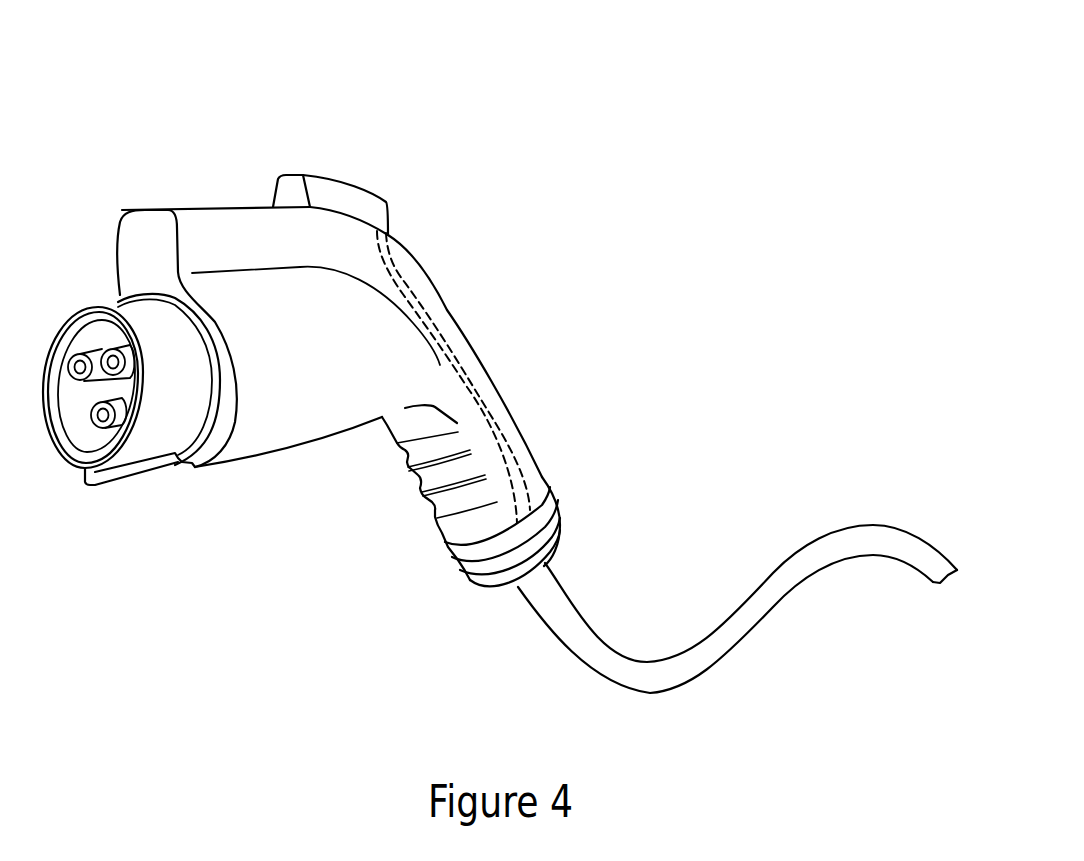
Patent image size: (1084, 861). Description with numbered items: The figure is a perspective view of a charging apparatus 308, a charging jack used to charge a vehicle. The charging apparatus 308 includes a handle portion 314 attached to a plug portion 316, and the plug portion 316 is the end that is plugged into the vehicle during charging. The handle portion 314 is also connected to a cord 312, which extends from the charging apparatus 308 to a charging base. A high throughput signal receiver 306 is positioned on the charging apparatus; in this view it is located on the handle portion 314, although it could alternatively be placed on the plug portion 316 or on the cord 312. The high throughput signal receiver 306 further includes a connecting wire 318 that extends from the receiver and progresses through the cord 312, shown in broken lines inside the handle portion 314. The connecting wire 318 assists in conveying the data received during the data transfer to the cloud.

The high throughput signal receiver 306 is at (355, 184).
The charging apparatus 308 is at (637, 63).
The cord 312 is at (646, 662).
The handle portion 314 is at (468, 190).
The plug portion 316 is at (280, 160).
The connecting wire 318 is at (487, 413).